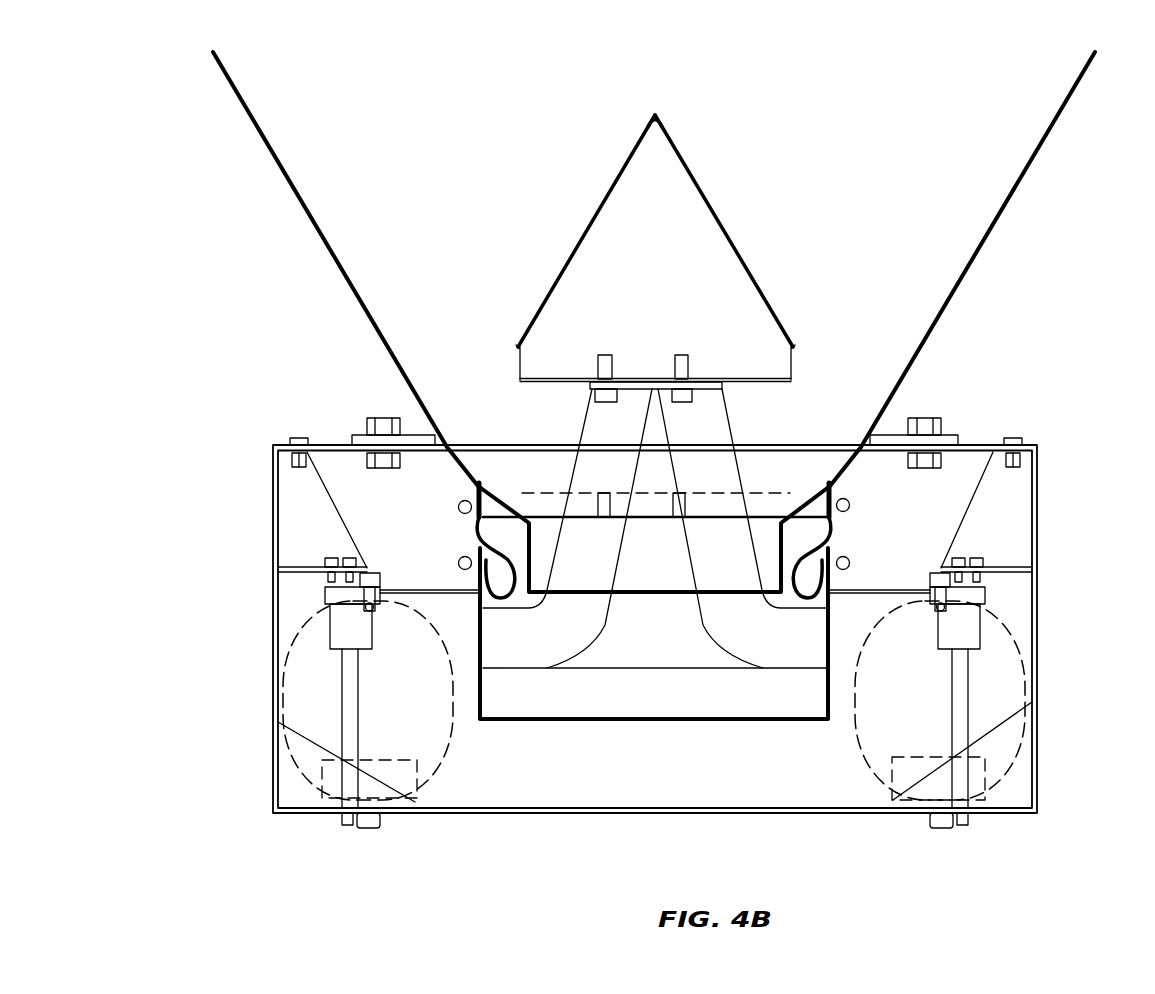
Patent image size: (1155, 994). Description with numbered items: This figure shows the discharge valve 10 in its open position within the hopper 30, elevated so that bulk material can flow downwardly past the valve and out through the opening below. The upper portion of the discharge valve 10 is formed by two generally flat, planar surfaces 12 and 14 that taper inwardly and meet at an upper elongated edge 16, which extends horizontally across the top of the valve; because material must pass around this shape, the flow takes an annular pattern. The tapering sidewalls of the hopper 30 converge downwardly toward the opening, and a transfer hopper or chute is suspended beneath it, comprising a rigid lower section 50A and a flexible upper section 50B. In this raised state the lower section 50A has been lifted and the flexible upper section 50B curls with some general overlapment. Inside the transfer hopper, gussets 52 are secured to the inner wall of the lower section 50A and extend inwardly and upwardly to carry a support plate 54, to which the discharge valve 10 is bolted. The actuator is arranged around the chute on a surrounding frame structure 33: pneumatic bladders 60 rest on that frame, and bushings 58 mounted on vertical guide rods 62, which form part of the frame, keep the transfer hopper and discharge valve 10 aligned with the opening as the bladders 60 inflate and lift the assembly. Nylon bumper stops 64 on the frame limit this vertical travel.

The discharge valve 10 is at (483, 91).
The flat planar surface 12 is at (583, 233).
The flat planar surface 14 is at (705, 185).
The upper elongated edge 16 is at (658, 112).
The hopper 30 is at (1033, 148).
The frame 33 is at (792, 473).
The rigid lower section 50A is at (505, 700).
The flexible upper section 50B is at (833, 530).
The gusset 52 is at (743, 627).
The support plate 54 is at (698, 397).
The bushing 58 is at (968, 622).
The pneumatic bladder 60 is at (323, 705).
The vertical guide rod 62 is at (960, 707).
The nylon bumper stop 64 is at (325, 573).